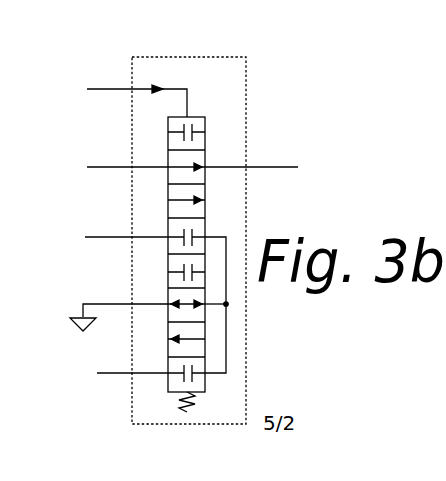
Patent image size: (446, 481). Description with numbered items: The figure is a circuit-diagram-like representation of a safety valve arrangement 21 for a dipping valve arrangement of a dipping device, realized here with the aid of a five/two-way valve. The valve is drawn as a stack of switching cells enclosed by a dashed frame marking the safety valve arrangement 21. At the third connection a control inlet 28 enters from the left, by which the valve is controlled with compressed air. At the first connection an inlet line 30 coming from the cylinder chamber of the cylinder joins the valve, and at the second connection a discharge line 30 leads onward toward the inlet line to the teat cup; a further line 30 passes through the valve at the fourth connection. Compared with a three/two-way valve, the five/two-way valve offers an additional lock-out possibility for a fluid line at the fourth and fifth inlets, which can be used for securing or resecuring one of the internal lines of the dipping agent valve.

The safety valve arrangement 21 is at (256, 53).
The control inlet 28 is at (137, 93).
The inlet line / discharge line 30 is at (191, 271).